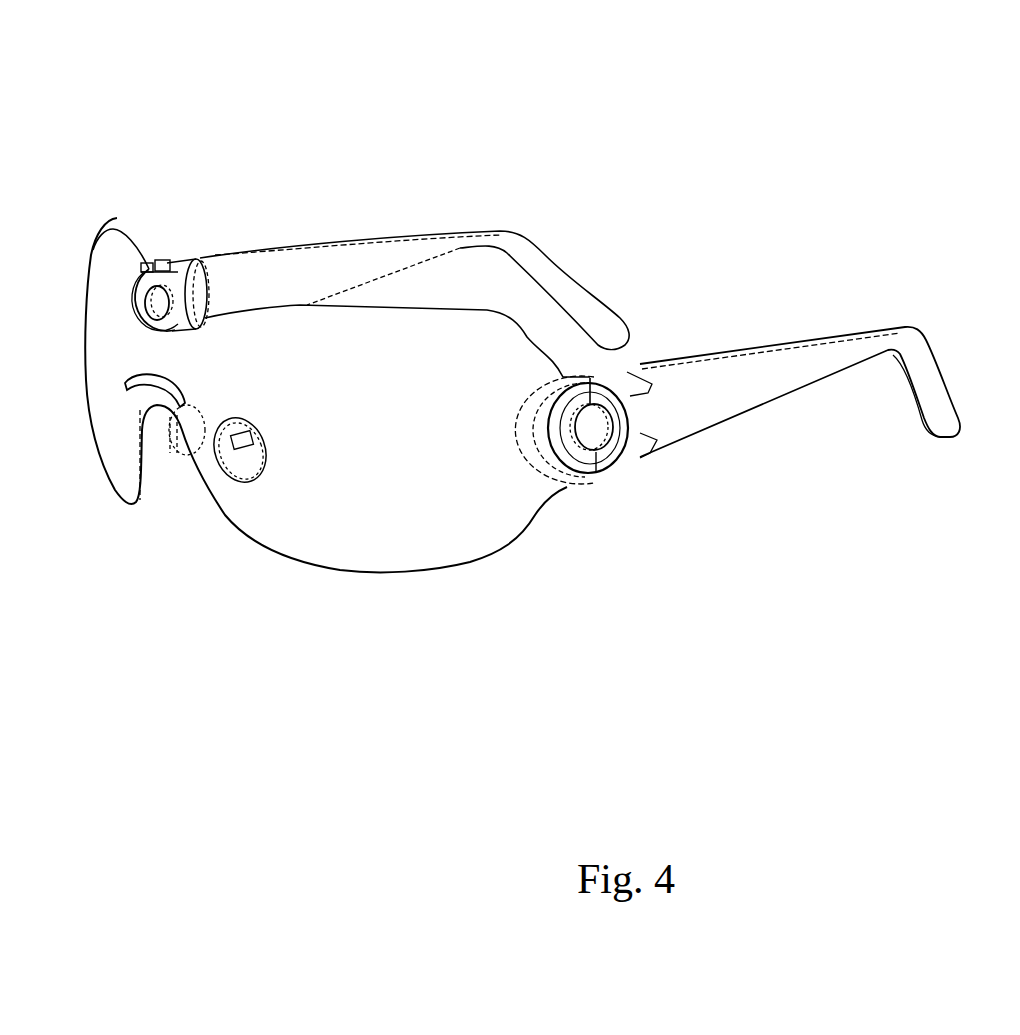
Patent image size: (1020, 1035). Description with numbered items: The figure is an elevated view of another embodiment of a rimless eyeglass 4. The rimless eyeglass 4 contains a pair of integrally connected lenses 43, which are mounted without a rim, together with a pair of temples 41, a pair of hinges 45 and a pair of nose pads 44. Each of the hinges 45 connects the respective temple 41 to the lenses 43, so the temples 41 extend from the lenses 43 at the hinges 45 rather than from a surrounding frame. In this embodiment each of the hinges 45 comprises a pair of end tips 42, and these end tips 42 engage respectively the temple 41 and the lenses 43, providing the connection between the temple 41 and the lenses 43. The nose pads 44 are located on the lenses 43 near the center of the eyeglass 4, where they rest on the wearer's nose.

The rimless eyeglass 4 is at (338, 215).
The temple 41 is at (742, 411).
The end tip 42 is at (138, 267).
The integrally connected lenses 43 is at (450, 537).
The nose pad 44 is at (187, 450).
The hinge 45 is at (186, 264).